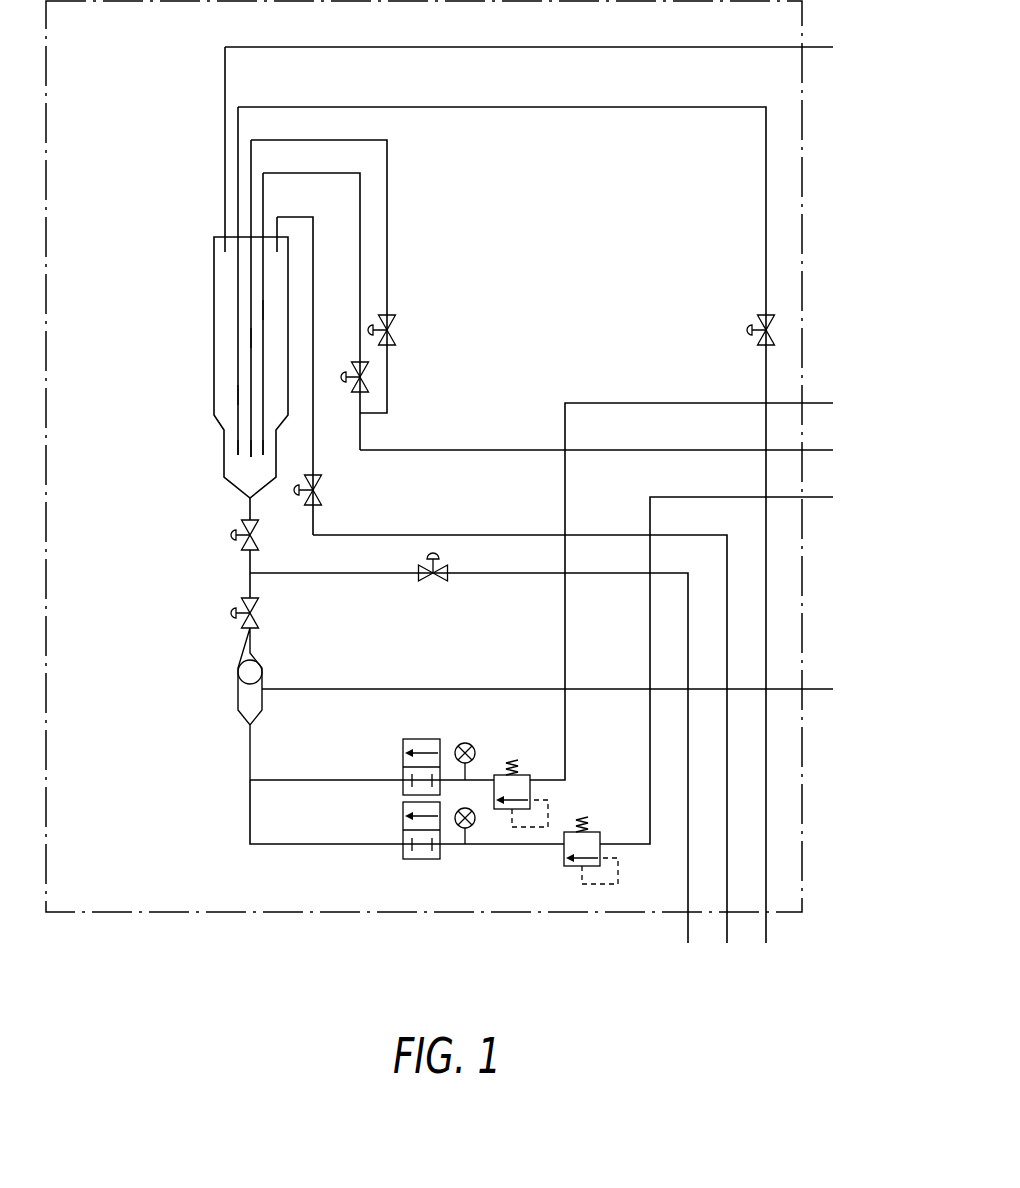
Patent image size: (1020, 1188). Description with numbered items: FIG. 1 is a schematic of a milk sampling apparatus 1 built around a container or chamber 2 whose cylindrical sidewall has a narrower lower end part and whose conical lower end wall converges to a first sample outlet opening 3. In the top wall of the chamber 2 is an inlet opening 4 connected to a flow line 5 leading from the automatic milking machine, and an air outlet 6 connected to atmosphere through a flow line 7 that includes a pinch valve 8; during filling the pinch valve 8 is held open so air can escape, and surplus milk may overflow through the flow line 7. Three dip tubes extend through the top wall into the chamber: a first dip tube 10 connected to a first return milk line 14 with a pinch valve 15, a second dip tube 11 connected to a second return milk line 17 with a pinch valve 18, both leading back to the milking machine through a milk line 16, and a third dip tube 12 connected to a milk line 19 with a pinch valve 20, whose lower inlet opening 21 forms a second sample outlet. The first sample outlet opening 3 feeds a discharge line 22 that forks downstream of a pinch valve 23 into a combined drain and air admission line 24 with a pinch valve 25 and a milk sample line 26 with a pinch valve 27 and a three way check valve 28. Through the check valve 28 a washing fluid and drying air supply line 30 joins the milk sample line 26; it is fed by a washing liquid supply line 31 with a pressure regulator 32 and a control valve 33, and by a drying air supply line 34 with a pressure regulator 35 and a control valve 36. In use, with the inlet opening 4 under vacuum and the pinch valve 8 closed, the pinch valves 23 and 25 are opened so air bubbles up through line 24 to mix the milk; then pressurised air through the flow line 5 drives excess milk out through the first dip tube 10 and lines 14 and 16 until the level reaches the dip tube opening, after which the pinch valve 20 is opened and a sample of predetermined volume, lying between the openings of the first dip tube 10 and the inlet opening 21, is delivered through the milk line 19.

The milk sampling apparatus 1 is at (803, 332).
The container or chamber 2 is at (214, 357).
The first sample outlet opening 3 is at (250, 507).
The inlet opening 4 is at (225, 243).
The flow line 5 is at (398, 47).
The air outlet 6 is at (270, 247).
The flow line 7 is at (364, 535).
The pinch valve 8 is at (318, 497).
The first dip tube 10 is at (263, 308).
The second dip tube 11 is at (251, 338).
The third dip tube 12 is at (238, 395).
The first return milk line 14 is at (361, 225).
The pinch valve 15 is at (368, 378).
The milk line 16 is at (635, 450).
The second return milk line 17 is at (388, 258).
The pinch valve 18 is at (393, 325).
The milk line 19 is at (470, 107).
The pinch valve 20 is at (756, 318).
The inlet opening 21 is at (238, 452).
The line 22 is at (250, 563).
The pinch valve 23 is at (258, 535).
The combined drain and air admission line 24 is at (373, 574).
The pinch valve 25 is at (441, 580).
The milk sample line 26 is at (346, 689).
The pinch valve 27 is at (258, 619).
The three way check valve 28 is at (238, 682).
The washing fluid and drying air supply line 30 is at (250, 752).
The washing liquid supply line 31 is at (565, 735).
The pressure regulator 32 is at (530, 786).
The control valve 33 is at (404, 748).
The drying air supply line 34 is at (650, 762).
The pressure regulator 35 is at (564, 850).
The control valve 36 is at (404, 855).